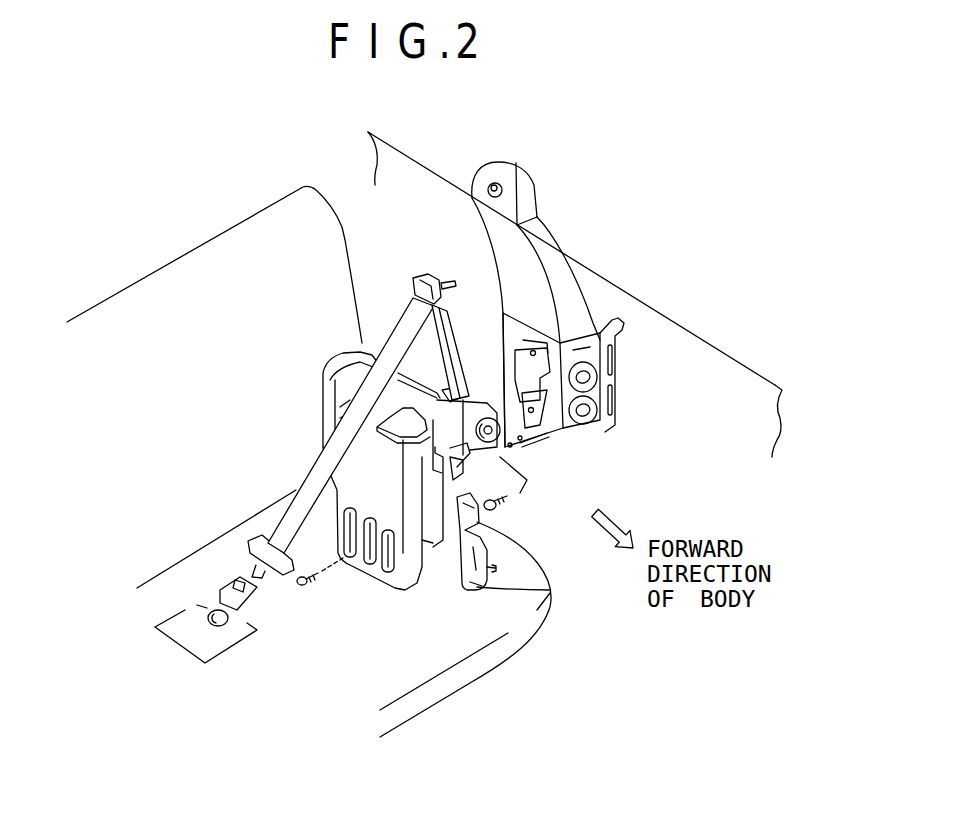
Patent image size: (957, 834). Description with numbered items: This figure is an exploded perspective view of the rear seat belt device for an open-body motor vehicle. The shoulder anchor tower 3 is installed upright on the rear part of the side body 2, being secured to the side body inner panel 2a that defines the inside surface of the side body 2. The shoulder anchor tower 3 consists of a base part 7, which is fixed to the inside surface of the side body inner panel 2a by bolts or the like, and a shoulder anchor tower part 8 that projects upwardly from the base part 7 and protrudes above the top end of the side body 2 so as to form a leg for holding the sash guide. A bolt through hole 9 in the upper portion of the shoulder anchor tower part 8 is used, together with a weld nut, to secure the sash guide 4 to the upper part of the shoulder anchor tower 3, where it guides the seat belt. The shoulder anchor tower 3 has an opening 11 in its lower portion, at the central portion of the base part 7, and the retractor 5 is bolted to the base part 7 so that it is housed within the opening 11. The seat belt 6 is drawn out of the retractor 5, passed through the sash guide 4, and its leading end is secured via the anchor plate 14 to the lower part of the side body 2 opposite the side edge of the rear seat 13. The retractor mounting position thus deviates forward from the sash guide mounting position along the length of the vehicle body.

The side body 2 is at (746, 402).
The side body inner panel 2a is at (686, 350).
The shoulder anchor tower 3 is at (575, 236).
The sash guide 4 is at (417, 283).
The retractor 5 is at (495, 447).
The seat belt 6 is at (423, 347).
The base part 7 is at (608, 430).
The shoulder anchor tower part 8 is at (540, 282).
The bolt through hole 9 is at (498, 187).
The opening 11 is at (546, 410).
The rear seat 13 is at (420, 673).
The anchor plate 14 is at (550, 590).